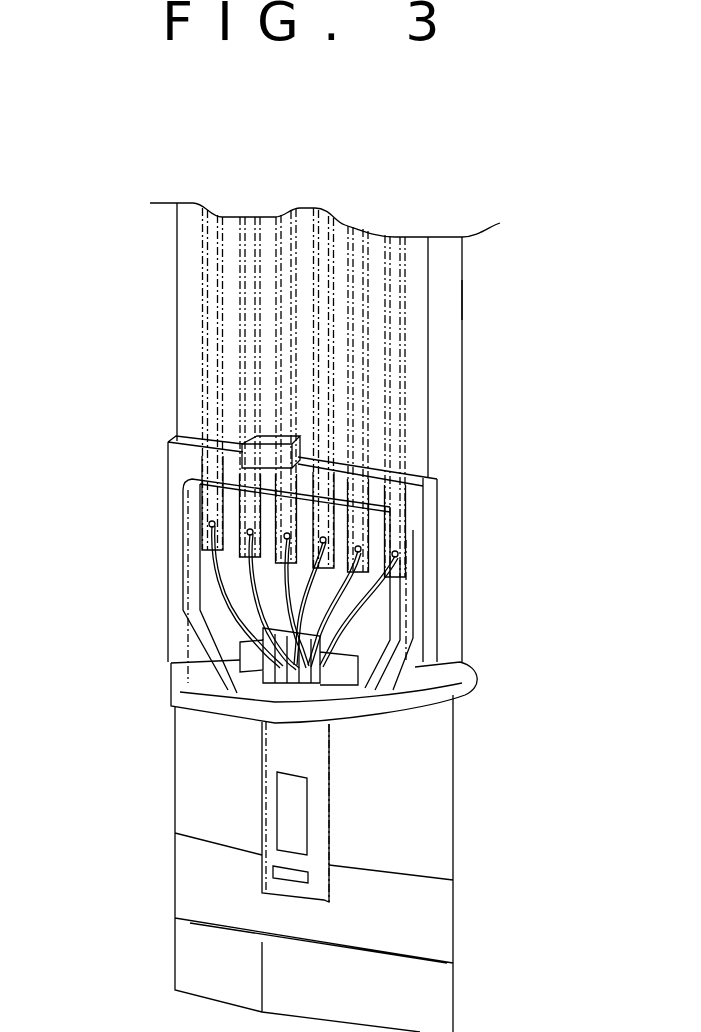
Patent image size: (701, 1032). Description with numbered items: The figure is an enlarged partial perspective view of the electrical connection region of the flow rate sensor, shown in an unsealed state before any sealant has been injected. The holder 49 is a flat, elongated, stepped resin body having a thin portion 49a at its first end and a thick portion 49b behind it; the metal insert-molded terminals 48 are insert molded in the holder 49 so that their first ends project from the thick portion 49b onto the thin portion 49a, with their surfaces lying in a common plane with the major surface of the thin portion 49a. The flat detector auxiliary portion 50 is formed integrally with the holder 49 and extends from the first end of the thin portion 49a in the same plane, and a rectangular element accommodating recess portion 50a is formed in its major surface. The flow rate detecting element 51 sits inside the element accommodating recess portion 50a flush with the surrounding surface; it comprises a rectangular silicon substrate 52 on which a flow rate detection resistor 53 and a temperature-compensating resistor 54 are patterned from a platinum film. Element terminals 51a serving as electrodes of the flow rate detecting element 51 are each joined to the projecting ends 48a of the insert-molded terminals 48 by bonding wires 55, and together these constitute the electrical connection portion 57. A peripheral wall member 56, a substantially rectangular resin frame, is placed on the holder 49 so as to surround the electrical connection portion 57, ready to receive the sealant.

The insert-molded terminals 48 is at (204, 345).
The projecting ends 48a is at (203, 518).
The holder 49 is at (462, 361).
The thin portion 49a is at (455, 556).
The thick portion 49b is at (452, 300).
The detector auxiliary portion 50 is at (445, 826).
The element accommodating recess portion 50a is at (330, 755).
The flow rate detecting element 51 is at (195, 812).
The element terminals 51a is at (228, 660).
The silicon substrate 52 is at (273, 755).
The flow rate detection resistor 53 is at (287, 808).
The temperature-compensating resistor 54 is at (273, 870).
The bonding wires 55 is at (215, 592).
The peripheral wall member 56 is at (170, 567).
The electrical connection portion 57 is at (373, 609).